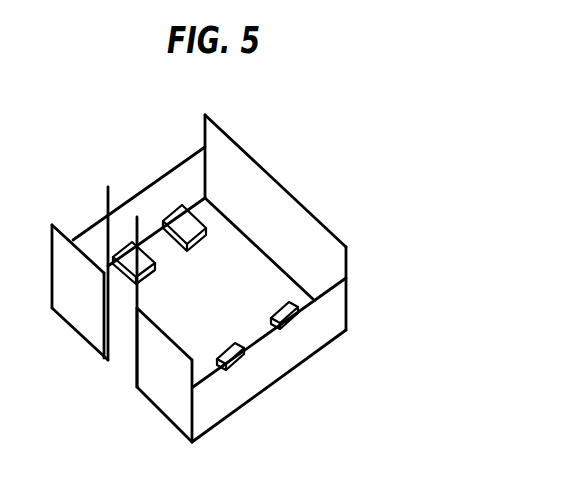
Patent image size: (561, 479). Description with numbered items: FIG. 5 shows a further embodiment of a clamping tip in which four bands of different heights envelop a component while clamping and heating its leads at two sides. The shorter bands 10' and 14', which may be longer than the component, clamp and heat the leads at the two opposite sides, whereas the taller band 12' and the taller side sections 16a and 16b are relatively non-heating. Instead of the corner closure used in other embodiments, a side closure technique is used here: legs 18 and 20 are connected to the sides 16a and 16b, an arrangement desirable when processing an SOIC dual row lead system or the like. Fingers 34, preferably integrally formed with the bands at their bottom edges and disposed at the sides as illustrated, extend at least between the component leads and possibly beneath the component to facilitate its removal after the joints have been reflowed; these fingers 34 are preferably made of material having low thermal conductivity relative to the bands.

The shorter band 10' is at (139, 178).
The taller band 12' is at (278, 222).
The shorter band 14' is at (269, 360).
The taller band section 16a is at (83, 293).
The taller band section 16b is at (173, 374).
The leg 18 is at (105, 210).
The leg 20 is at (137, 220).
The fingers 34 is at (280, 305).